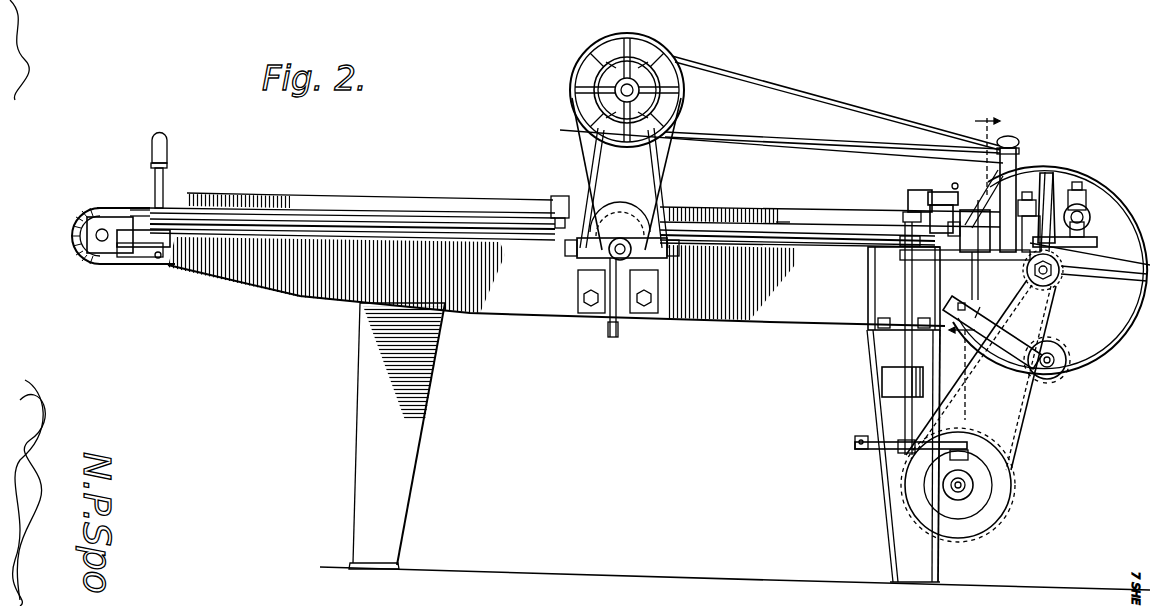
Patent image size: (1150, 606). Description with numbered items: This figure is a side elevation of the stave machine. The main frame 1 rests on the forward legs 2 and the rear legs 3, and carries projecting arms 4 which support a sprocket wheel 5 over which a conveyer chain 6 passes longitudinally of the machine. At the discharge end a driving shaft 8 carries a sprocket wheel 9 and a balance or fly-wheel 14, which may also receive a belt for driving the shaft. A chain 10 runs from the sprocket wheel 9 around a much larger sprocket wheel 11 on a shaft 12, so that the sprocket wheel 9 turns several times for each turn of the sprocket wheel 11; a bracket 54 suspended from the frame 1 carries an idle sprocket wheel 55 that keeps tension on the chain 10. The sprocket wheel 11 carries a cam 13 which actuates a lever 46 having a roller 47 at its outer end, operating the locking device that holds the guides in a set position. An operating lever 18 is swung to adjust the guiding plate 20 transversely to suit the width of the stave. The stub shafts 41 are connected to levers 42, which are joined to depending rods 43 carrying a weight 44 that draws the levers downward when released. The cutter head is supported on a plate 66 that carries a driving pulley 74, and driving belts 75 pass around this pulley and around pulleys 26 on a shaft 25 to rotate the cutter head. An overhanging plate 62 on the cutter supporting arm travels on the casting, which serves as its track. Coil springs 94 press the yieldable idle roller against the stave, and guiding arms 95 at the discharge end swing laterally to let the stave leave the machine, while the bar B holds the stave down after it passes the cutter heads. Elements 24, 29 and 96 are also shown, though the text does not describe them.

The main frame 1 is at (534, 318).
The forward legs 2 is at (380, 500).
The rear legs 3 is at (878, 408).
The projecting arms 4 is at (138, 256).
The sprocket wheel 5 is at (74, 240).
The conveyer chain 6 is at (125, 208).
The driving shaft 8 is at (1076, 267).
The sprocket wheel 9 is at (1058, 284).
The chain 10 is at (950, 412).
The sprocket wheel 11 is at (1012, 480).
The shaft 12 is at (962, 500).
The cam 13 is at (940, 500).
The balance or fly-wheel 14 is at (1044, 176).
The operating lever 18 is at (170, 187).
The guiding plate 20 is at (392, 197).
The rail 24 is at (683, 206).
The shaft 25 is at (635, 90).
The pulleys 26 is at (668, 50).
The pulley frame 29 is at (684, 170).
The stub shafts 41 is at (942, 196).
The levers 42 is at (908, 208).
The depending rods 43 is at (870, 284).
The weight 44 is at (882, 380).
The lever 46 is at (870, 452).
The roller 47 is at (970, 458).
The bracket 54 is at (1010, 338).
The idle sprocket wheel 55 is at (1056, 378).
The overhanging plate 62 is at (980, 205).
The plate 66 is at (998, 200).
The driving pulley 74 is at (1028, 173).
The driving belts 75 is at (847, 110).
The coil springs 94 is at (1090, 200).
The guiding arms 95 is at (1090, 246).
The journal 96 is at (1092, 212).
The bar B is at (776, 220).